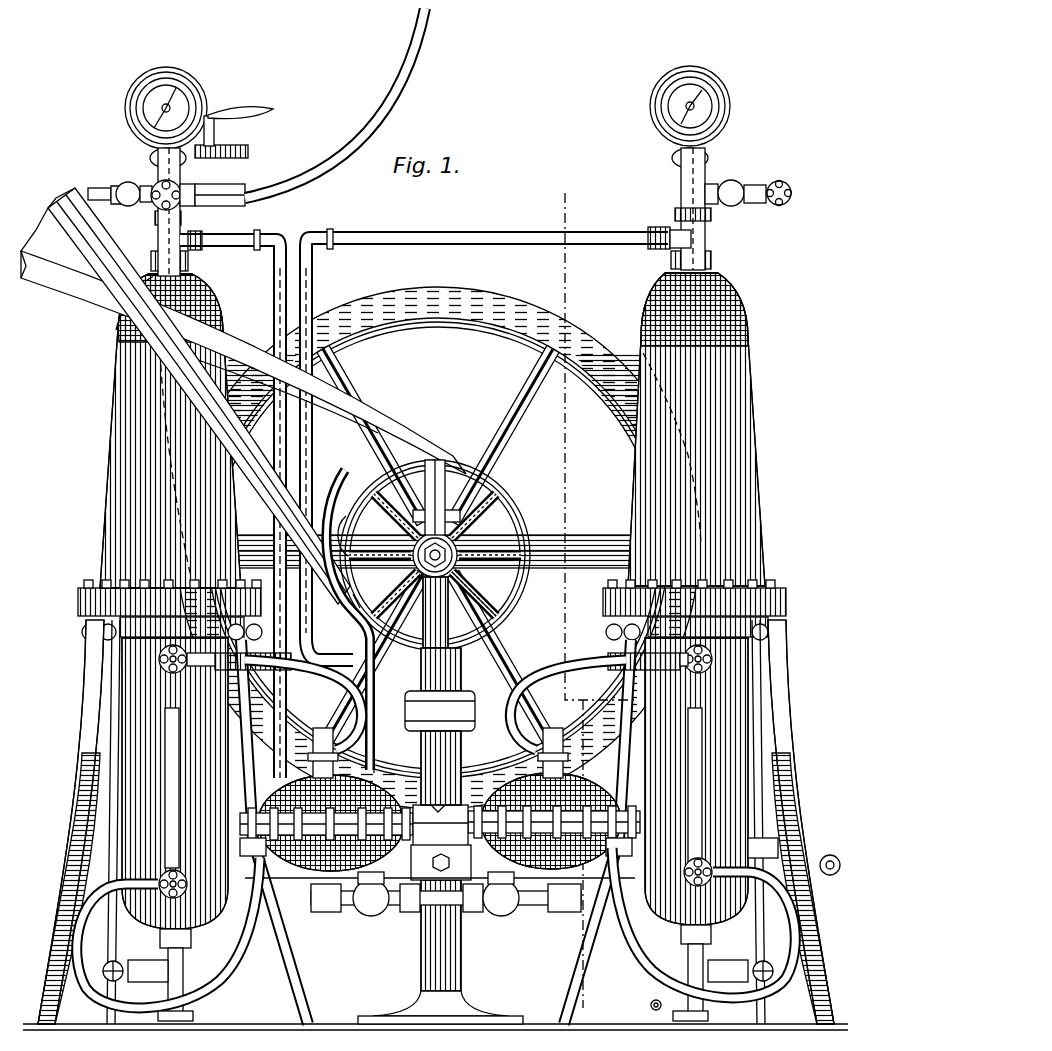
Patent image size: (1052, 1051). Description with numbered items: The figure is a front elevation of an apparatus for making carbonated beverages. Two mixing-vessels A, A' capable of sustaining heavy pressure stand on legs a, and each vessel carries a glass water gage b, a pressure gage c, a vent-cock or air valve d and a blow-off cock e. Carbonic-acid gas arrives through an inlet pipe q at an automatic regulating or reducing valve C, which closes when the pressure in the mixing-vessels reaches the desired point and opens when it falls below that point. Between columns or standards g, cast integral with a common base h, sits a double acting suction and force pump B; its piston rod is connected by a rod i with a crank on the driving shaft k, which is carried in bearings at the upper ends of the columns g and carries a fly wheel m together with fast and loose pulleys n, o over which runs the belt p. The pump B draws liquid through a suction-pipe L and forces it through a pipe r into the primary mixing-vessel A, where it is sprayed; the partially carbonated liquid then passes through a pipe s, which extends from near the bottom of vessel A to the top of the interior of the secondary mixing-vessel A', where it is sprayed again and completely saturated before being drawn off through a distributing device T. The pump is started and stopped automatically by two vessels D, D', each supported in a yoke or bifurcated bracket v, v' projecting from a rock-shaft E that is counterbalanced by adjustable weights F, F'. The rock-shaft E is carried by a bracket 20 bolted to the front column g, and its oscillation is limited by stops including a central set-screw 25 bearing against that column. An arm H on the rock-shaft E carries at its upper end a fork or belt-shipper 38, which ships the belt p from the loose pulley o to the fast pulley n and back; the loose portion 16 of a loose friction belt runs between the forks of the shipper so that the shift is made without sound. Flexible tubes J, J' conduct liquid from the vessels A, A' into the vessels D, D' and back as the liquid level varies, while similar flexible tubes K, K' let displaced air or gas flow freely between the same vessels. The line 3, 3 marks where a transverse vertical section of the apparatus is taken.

The pressure gage c is at (172, 96).
The automatic regulating or reducing valve C is at (247, 143).
The vent-cock or air valve d is at (120, 183).
The inlet pipe q is at (282, 184).
The pipe r is at (223, 232).
The pipe s is at (520, 230).
The section line 3 is at (611, 593).
The primary mixing-vessel A is at (154, 399).
The secondary mixing-vessel A' is at (714, 418).
The fly wheel m is at (427, 285).
The belt p is at (392, 422).
The suction-pipe L is at (343, 470).
The loose pulley o is at (434, 462).
The loose portion of the friction belt 16 is at (355, 520).
The fast or driving pulley n is at (470, 505).
The rod i is at (452, 515).
The driving shaft k is at (468, 568).
The fork or belt-shipper 38 is at (344, 590).
The flexible tube K is at (260, 697).
The flexible tube K' is at (611, 687).
The legs a is at (86, 655).
The glass water gage b is at (160, 717).
The arm H is at (368, 703).
The columns or standards g is at (441, 665).
The rock-shaft E is at (405, 790).
The set-screw 25 is at (430, 792).
The weight F is at (331, 753).
The weight F' is at (514, 761).
The yoke or bifurcated bracket v is at (363, 862).
The bolts v' is at (629, 851).
The vessel D is at (250, 865).
The vessel D' is at (620, 864).
The flexible tube J is at (171, 933).
The flexible tube J' is at (705, 923).
The bracket 20 is at (353, 907).
The double acting suction and force pump B is at (466, 912).
The common base h is at (490, 1007).
The blow-off cock e is at (162, 958).
The distributing device T is at (770, 836).